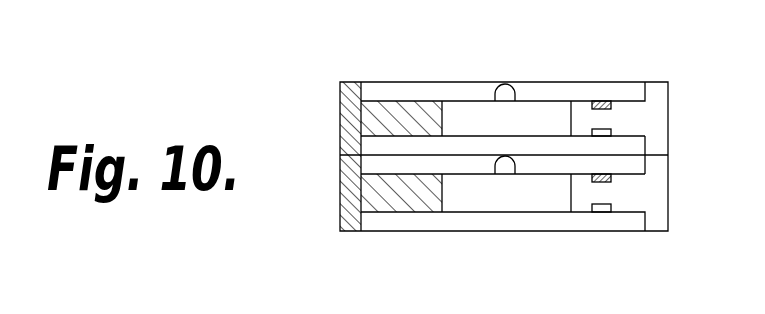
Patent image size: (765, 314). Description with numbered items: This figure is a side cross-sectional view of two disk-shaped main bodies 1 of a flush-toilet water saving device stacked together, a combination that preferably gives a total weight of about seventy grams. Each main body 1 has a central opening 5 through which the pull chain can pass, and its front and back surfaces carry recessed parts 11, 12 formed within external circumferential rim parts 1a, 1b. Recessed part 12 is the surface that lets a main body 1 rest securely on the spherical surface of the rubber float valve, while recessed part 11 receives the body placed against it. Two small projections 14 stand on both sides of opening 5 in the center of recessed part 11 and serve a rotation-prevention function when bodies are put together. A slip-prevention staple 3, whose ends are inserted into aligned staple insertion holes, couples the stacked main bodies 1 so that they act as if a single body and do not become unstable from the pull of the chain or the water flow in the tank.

The main body 1 is at (668, 116).
The external circumferential rim part 1a is at (352, 81).
The external circumferential rim part 1b is at (655, 232).
The slip-prevention staple 3 is at (598, 101).
The opening 5 is at (442, 107).
The recessed part 11 is at (416, 200).
The recessed part 12 is at (388, 148).
The small projection 14 is at (508, 156).